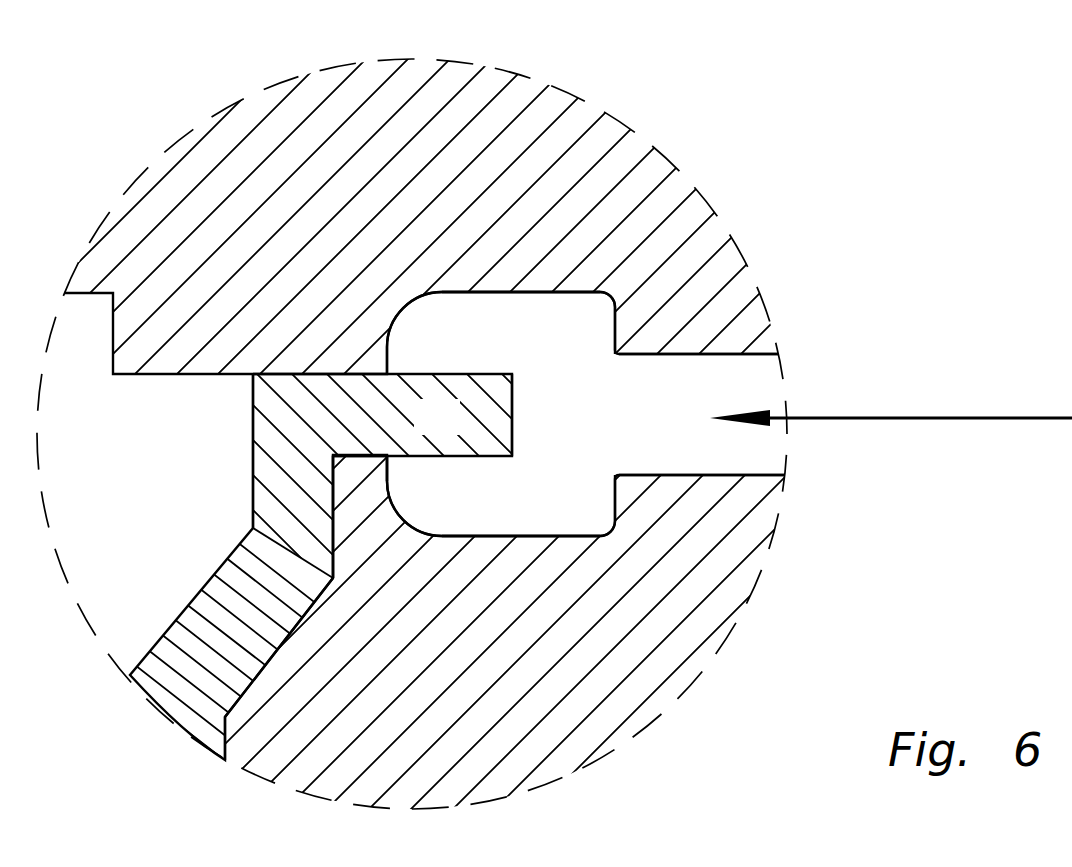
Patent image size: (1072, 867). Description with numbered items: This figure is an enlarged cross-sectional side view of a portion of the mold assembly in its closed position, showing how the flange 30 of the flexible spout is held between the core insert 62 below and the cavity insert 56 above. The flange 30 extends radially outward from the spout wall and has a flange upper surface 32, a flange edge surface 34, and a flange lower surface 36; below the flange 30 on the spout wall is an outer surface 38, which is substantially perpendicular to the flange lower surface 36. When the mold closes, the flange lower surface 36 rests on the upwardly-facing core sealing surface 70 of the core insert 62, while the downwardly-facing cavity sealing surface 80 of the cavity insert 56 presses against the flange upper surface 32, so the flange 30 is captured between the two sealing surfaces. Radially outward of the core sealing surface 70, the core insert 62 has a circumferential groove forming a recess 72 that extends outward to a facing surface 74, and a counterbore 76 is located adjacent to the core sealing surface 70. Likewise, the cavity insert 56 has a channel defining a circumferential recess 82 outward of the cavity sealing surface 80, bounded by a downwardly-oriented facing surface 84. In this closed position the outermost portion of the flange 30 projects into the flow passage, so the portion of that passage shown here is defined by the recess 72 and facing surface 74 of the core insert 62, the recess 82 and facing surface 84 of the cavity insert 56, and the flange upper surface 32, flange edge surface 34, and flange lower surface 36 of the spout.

The cavity insert 56 is at (515, 132).
The core insert 62 is at (630, 680).
The flange 30 is at (514, 433).
The flange upper surface 32 is at (488, 373).
The flange edge surface 34 is at (513, 408).
The flange lower surface 36 is at (410, 460).
The outer surface 38 is at (342, 526).
The core sealing surface 70 is at (348, 440).
The recess 72 is at (576, 514).
The facing surface 74 is at (719, 472).
The counterbore 76 is at (330, 562).
The cavity sealing surface 80 is at (297, 384).
The recess 82 is at (538, 325).
The facing surface 84 is at (717, 358).